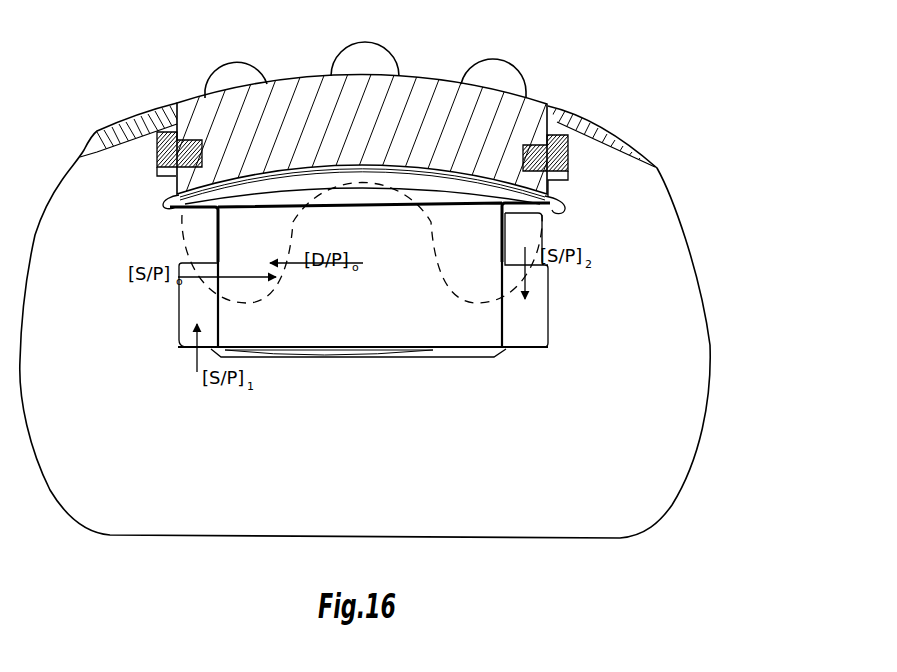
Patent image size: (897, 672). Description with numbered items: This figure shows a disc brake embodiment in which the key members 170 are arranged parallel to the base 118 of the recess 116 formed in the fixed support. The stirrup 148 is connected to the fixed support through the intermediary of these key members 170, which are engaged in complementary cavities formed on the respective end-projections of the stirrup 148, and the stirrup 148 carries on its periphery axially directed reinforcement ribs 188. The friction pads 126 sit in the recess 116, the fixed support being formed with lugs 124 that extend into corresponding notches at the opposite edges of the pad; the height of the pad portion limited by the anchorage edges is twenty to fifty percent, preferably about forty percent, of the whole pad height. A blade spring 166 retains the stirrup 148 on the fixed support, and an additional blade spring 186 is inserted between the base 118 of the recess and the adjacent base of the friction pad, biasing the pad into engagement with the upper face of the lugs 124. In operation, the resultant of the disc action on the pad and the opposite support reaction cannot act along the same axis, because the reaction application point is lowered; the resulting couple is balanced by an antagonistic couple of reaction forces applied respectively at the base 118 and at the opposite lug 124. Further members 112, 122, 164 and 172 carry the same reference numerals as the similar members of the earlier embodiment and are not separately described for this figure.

The housing body 112 is at (132, 125).
The stirrup 148 is at (434, 73).
The reinforcement ribs 188 is at (225, 82).
The left retaining member 172 is at (157, 163).
The key members 170 is at (570, 142).
The blade spring 166 is at (241, 184).
The recess 116 is at (309, 178).
The dashed region 164 is at (262, 303).
The frame walls 122 is at (548, 337).
The friction pads 126 is at (188, 305).
The lugs 124 is at (535, 258).
The base of the recess 118 is at (290, 358).
The additional blade spring 186 is at (407, 357).